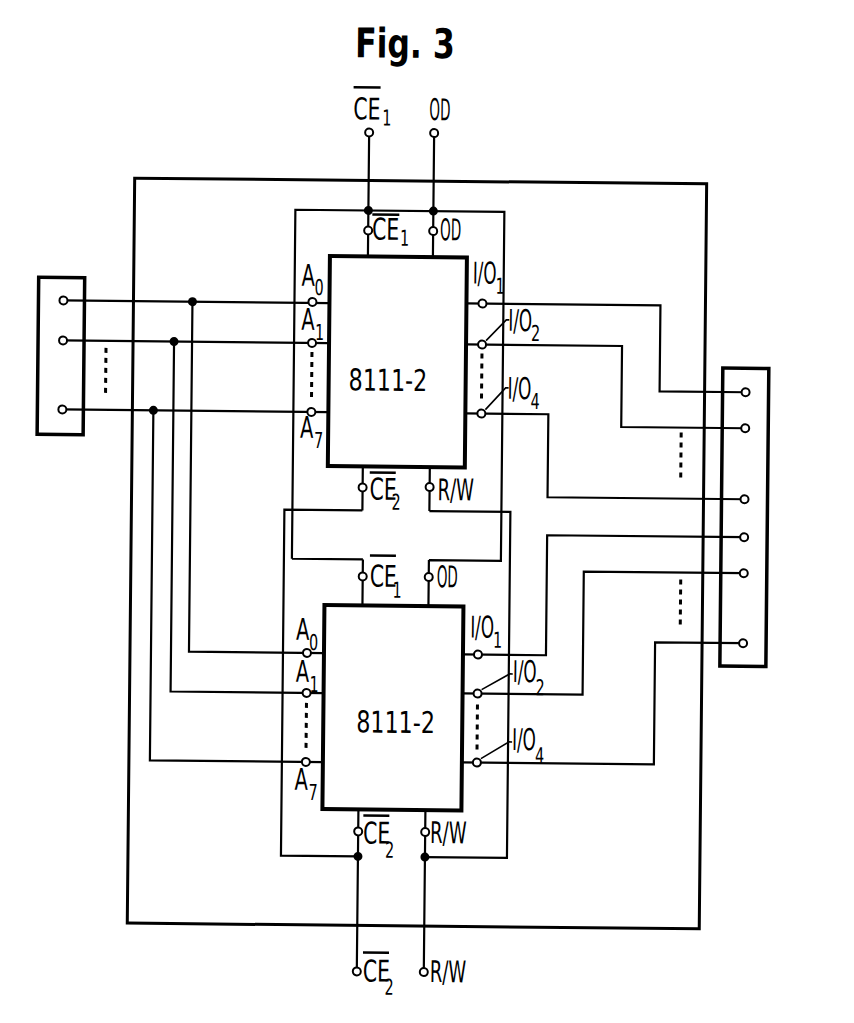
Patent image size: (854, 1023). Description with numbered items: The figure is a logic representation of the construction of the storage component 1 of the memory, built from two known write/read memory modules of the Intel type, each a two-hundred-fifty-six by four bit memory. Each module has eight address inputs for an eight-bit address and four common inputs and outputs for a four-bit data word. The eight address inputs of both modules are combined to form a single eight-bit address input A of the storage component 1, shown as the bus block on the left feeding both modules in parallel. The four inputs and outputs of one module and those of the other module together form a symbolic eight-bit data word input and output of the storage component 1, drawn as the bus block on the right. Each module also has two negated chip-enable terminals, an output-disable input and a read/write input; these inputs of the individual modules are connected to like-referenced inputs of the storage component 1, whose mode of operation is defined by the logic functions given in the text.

The storage component 1 is at (679, 178).
The eight-bit address input A is at (70, 281).